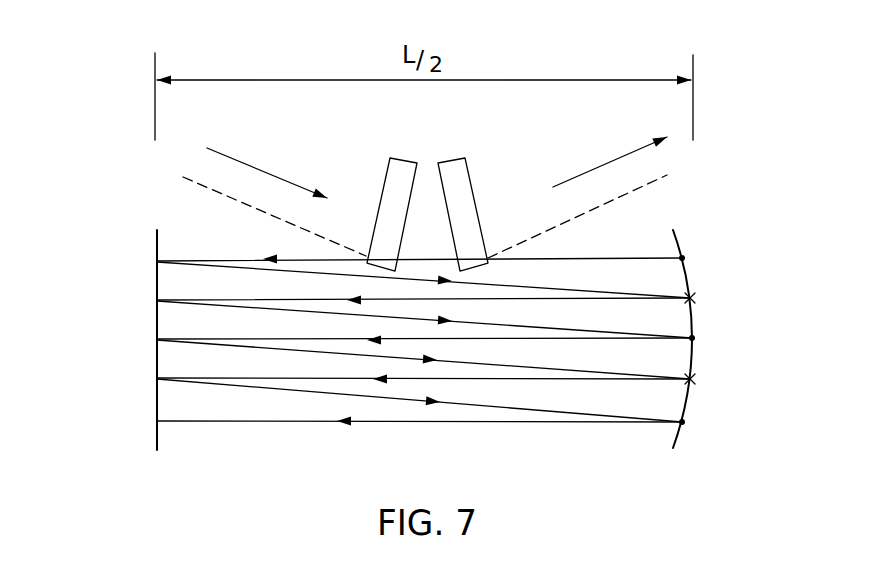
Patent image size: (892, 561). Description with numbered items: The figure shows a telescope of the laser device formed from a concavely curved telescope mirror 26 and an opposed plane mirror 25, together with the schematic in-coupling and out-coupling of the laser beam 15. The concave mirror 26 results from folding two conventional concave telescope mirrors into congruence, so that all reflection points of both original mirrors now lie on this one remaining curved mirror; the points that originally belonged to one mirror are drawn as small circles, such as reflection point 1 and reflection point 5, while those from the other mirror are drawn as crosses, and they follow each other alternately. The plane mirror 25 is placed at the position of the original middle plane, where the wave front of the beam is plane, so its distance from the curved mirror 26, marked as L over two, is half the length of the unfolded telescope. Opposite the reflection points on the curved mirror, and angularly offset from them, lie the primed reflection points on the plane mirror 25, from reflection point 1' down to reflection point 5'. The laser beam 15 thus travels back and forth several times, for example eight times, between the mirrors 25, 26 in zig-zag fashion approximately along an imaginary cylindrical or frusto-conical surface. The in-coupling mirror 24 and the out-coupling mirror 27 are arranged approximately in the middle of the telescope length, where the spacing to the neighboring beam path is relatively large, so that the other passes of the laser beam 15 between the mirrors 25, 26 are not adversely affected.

The laser beam 15 is at (220, 193).
The in-coupling mirror 24 is at (397, 187).
The out-coupling mirror 27 is at (455, 183).
The plane mirror 25 is at (157, 435).
The concavely curved telescope mirror 26 is at (678, 433).
The reflection point 1 is at (453, 255).
The reflection point 1' is at (401, 273).
The reflection point 5 is at (453, 419).
The reflection point 5' is at (135, 422).